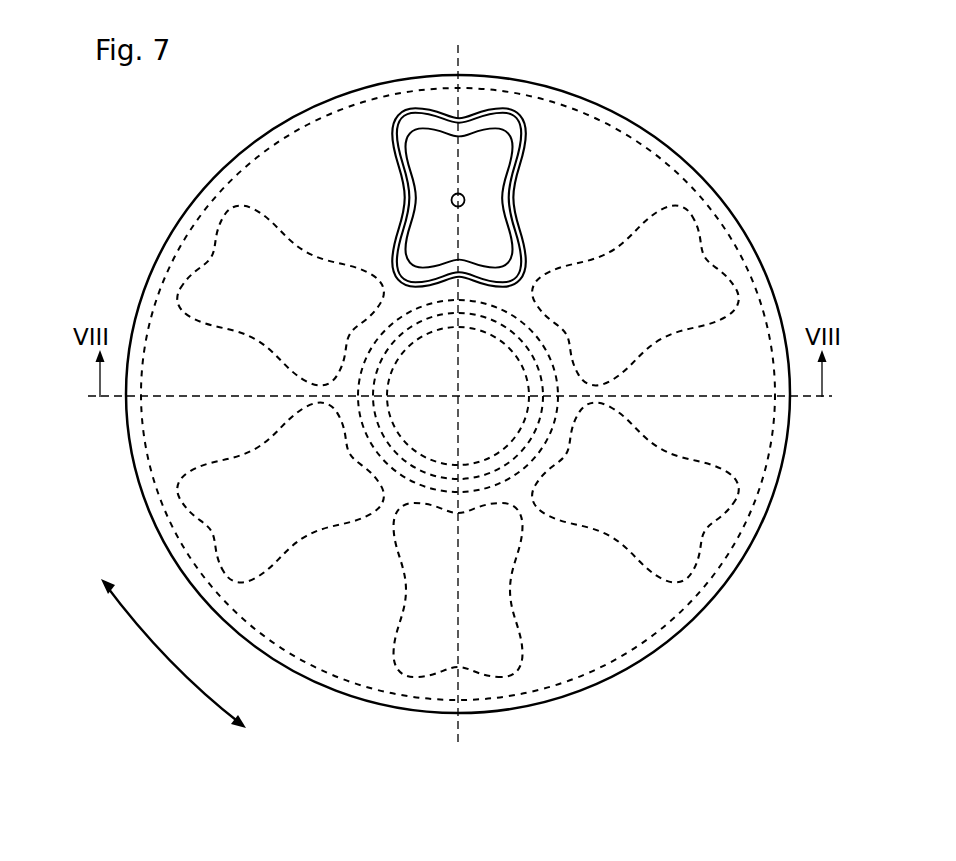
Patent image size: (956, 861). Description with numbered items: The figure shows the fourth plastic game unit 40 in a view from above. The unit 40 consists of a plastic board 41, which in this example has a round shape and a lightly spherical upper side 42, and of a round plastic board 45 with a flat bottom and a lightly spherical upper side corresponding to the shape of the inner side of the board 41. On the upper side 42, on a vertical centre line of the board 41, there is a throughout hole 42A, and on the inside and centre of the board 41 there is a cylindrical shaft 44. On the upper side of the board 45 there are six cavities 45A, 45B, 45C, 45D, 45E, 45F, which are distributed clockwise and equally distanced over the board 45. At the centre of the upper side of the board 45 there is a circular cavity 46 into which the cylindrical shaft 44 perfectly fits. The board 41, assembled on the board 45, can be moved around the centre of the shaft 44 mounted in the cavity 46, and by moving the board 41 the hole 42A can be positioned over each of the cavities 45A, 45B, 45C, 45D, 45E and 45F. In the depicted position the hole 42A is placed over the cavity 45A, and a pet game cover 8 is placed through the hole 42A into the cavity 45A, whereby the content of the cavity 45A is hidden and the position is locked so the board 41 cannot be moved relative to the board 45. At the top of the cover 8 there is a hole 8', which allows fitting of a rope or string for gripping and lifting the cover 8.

The fourth plastic game unit 40 is at (622, 86).
The plastic board 41 is at (688, 160).
The upper side 42 is at (300, 189).
The throughout hole 42A is at (397, 113).
The cylindrical shaft 44 is at (490, 462).
The round plastic board 45 is at (705, 202).
The cavity 45A is at (433, 145).
The cavity 45B is at (693, 220).
The cavity 45C is at (732, 480).
The cavity 45D is at (523, 648).
The cavity 45E is at (200, 503).
The cavity 45F is at (205, 317).
The circular cavity 46 is at (480, 482).
The pet game cover 8 is at (437, 162).
The hole 8' is at (493, 131).